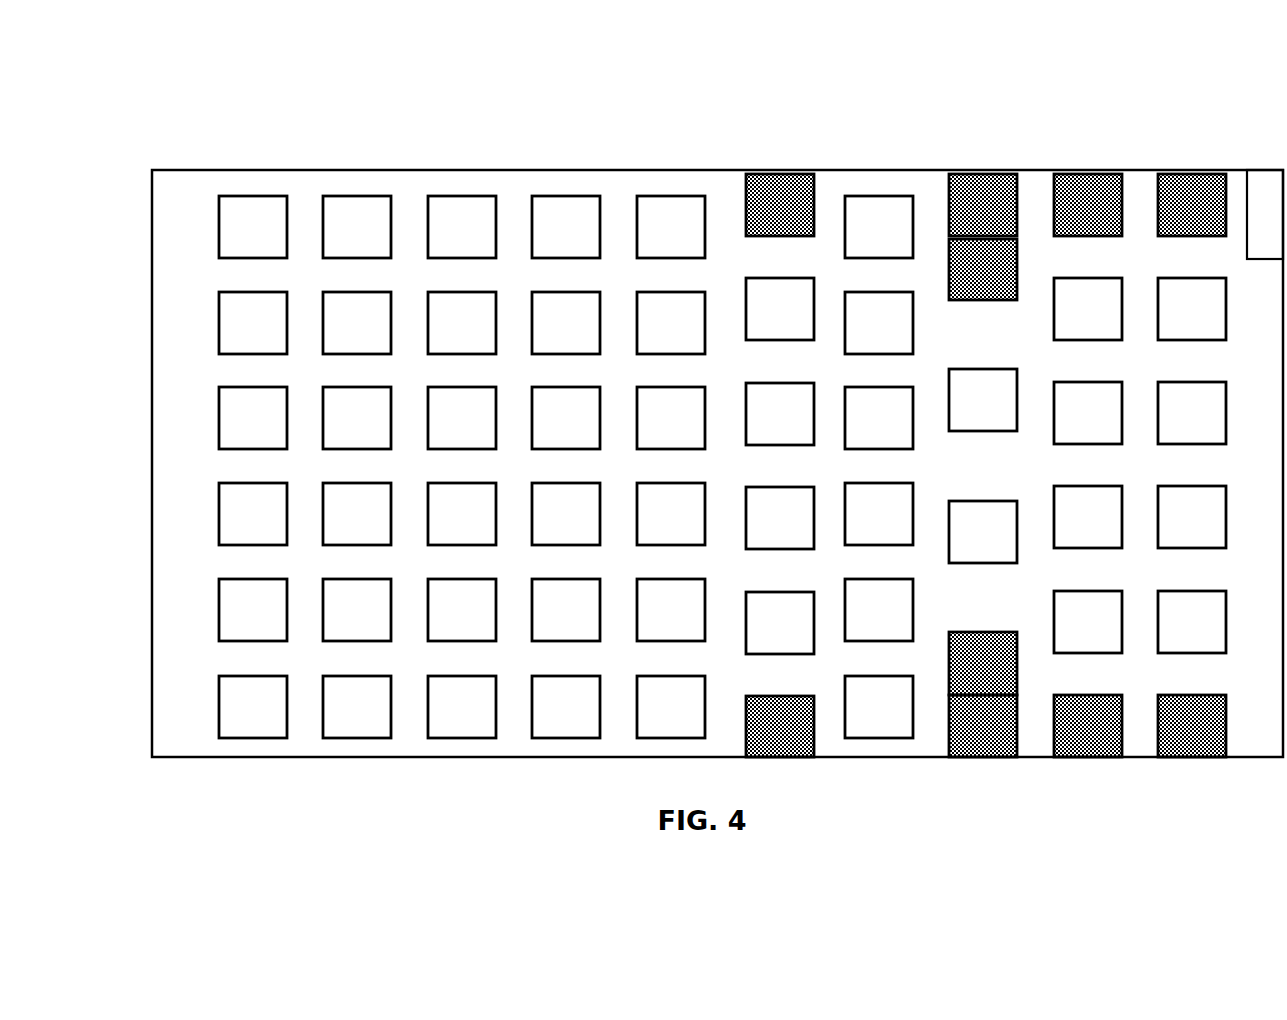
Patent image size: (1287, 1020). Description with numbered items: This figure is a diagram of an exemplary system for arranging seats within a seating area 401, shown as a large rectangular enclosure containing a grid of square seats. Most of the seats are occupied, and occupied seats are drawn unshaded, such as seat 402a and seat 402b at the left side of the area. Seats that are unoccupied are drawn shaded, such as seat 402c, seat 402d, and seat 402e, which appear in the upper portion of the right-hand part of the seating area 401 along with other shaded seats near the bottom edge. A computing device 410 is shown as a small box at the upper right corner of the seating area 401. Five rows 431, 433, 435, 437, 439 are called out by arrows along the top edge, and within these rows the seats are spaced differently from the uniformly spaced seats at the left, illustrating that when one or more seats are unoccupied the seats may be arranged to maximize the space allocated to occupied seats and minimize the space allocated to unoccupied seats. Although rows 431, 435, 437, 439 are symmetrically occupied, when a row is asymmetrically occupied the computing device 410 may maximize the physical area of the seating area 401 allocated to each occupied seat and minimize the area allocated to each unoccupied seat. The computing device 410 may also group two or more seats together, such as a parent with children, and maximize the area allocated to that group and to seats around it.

The seating area 401 is at (268, 109).
The seat 402a is at (253, 227).
The seat 402b is at (253, 323).
The seat 402c is at (780, 205).
The seat 402d is at (983, 205).
The seat 402e is at (983, 269).
The computing device 410 is at (1265, 214).
The row 431 is at (788, 157).
The row 433 is at (879, 157).
The row 435 is at (986, 157).
The row 437 is at (1088, 157).
The row 439 is at (1192, 157).